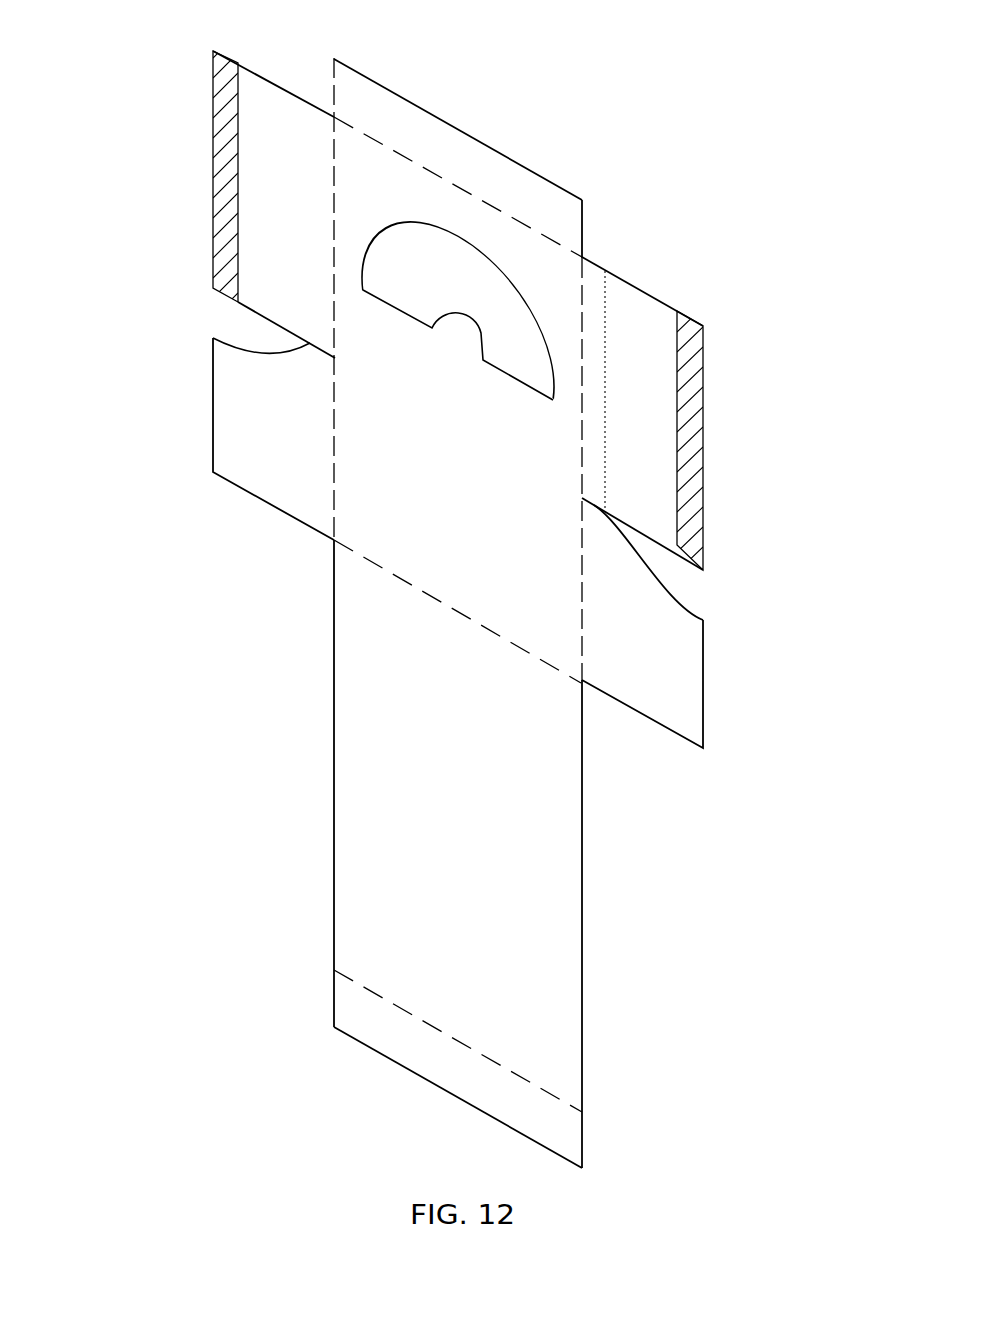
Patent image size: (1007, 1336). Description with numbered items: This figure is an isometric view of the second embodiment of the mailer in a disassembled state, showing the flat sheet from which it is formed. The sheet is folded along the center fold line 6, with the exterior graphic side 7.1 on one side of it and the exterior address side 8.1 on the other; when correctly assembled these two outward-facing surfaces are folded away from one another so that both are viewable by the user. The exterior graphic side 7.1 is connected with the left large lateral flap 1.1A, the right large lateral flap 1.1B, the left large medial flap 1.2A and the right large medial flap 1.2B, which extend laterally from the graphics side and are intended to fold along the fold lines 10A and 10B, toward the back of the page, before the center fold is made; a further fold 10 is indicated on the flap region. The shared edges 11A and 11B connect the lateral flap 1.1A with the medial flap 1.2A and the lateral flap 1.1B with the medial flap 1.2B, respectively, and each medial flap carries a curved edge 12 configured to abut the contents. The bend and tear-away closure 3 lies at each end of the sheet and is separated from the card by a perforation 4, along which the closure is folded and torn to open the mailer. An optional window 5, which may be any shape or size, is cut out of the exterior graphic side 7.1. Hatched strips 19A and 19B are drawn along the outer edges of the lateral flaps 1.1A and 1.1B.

The bend & tear-away closure 3 is at (490, 167).
The perforation 4 is at (540, 233).
The window 5 is at (437, 283).
The fold line 6 is at (397, 578).
The exterior graphic side 7.1 is at (475, 495).
The exterior address side 8.1 is at (475, 877).
The fold of flap 10 is at (582, 318).
The fold of flap 10A is at (580, 660).
The fold of flap 10B is at (333, 158).
The shared edge 11A is at (594, 506).
The shared edge 11B is at (320, 345).
The curved edge 12 is at (247, 342).
The adhesive strip 19A is at (703, 367).
The adhesive strip 19B is at (213, 117).
The left large lateral flap 1.1A is at (667, 431).
The right large lateral flap 1.1B is at (300, 205).
The left large medial flap 1.2A is at (692, 670).
The right large medial flap 1.2B is at (300, 450).